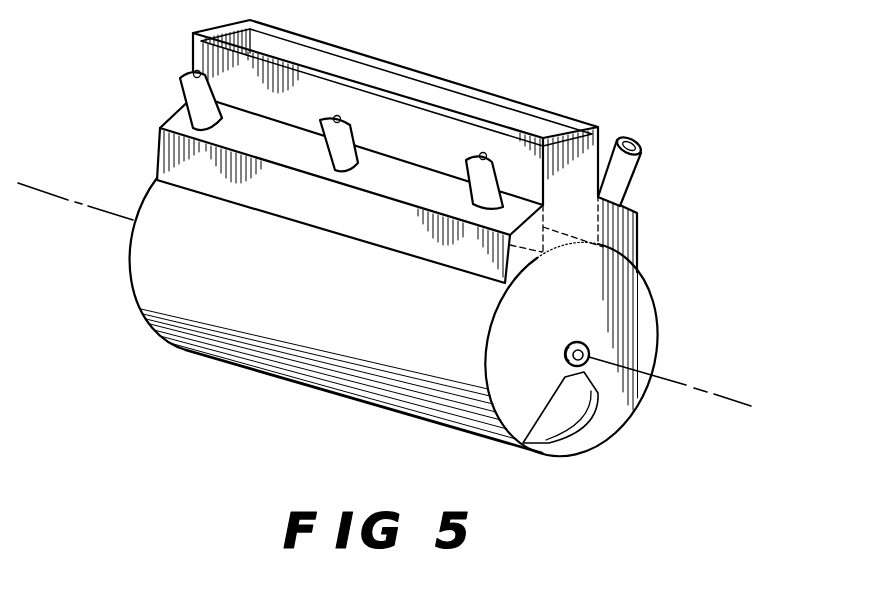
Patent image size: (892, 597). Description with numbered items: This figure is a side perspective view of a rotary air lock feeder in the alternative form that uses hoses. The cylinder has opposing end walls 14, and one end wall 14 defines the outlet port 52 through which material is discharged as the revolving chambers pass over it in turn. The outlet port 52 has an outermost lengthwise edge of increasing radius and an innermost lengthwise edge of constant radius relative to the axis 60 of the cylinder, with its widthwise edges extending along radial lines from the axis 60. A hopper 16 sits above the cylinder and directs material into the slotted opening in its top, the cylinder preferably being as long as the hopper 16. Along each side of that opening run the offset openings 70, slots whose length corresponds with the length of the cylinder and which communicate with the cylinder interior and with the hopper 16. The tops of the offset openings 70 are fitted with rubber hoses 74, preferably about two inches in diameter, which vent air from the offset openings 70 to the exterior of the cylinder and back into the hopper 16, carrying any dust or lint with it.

The end wall 14 is at (630, 303).
The hopper 16 is at (563, 163).
The outlet port 52 is at (563, 420).
The axis 60 is at (101, 208).
The offset opening 70 is at (517, 263).
The rubber hose 74 is at (187, 92).